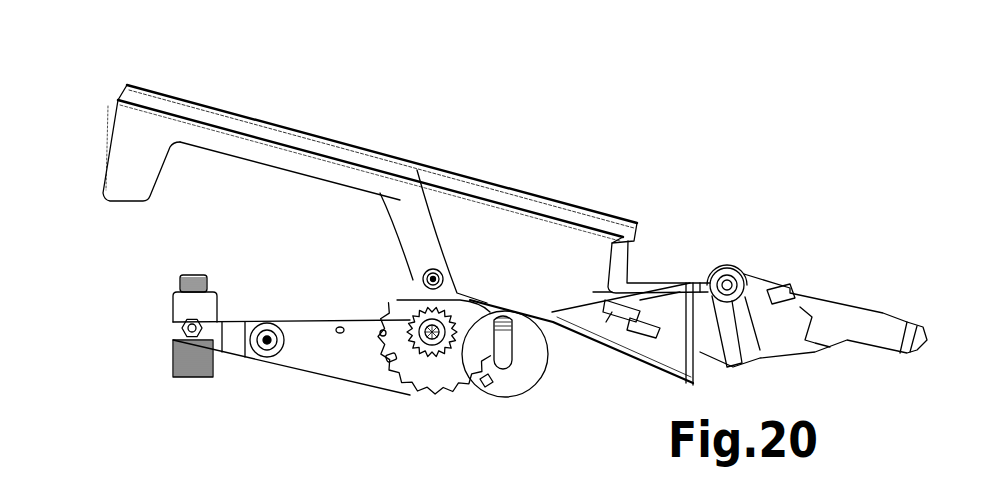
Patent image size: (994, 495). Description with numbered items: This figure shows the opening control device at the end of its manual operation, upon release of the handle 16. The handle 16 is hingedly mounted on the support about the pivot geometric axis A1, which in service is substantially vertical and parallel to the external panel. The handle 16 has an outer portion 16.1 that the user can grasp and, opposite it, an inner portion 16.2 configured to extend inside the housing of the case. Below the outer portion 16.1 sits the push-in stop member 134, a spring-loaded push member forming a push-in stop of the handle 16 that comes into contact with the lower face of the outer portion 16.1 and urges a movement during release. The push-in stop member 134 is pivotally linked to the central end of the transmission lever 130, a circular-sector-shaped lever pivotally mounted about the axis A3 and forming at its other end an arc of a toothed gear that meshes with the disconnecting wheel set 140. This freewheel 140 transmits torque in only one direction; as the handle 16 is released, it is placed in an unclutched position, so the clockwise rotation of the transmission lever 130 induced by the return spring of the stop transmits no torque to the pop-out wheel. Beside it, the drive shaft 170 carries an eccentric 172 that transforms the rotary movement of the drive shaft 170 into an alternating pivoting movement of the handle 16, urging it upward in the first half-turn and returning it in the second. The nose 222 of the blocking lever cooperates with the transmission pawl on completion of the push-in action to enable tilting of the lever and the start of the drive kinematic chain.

The handle 16 is at (537, 198).
The outer portion 16.1 is at (410, 157).
The inner portion 16.2 is at (847, 328).
The nose 222 is at (408, 300).
The transmission lever 130 is at (338, 348).
The push-in stop member 134 is at (178, 314).
The disconnecting wheel set 140 is at (445, 380).
The drive shaft 170 is at (507, 398).
The eccentric 172 is at (508, 340).
The pivot geometric axis A1 is at (724, 280).
The axis A3 is at (265, 330).